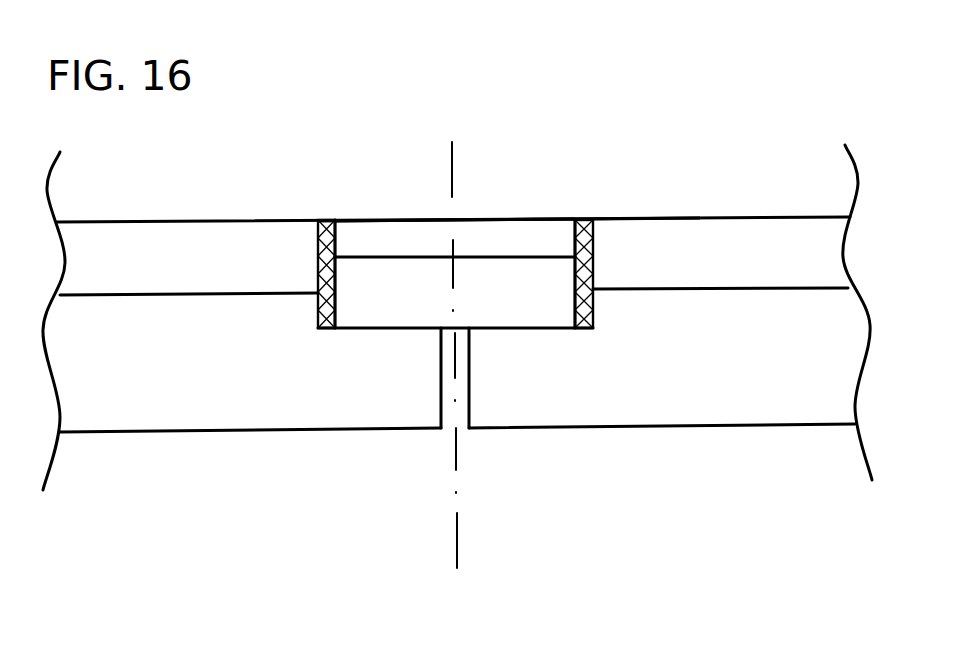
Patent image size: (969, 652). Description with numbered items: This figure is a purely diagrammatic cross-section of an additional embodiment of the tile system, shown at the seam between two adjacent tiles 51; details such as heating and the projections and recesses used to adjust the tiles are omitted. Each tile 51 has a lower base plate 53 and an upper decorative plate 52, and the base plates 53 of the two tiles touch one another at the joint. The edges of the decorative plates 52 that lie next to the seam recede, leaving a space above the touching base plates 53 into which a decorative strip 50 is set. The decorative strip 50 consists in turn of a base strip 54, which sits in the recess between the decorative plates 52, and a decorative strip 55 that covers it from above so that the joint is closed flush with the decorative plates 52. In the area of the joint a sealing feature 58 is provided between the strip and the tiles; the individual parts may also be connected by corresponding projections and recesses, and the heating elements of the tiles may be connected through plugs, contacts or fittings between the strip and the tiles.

The decorative strip 50 is at (494, 167).
The tile 51 is at (618, 167).
The decorative plate 52 is at (138, 267).
The base plate 53 is at (221, 366).
The base strip 54 is at (549, 306).
The decorative strip 55 is at (517, 237).
The sealing feature 58 is at (340, 240).